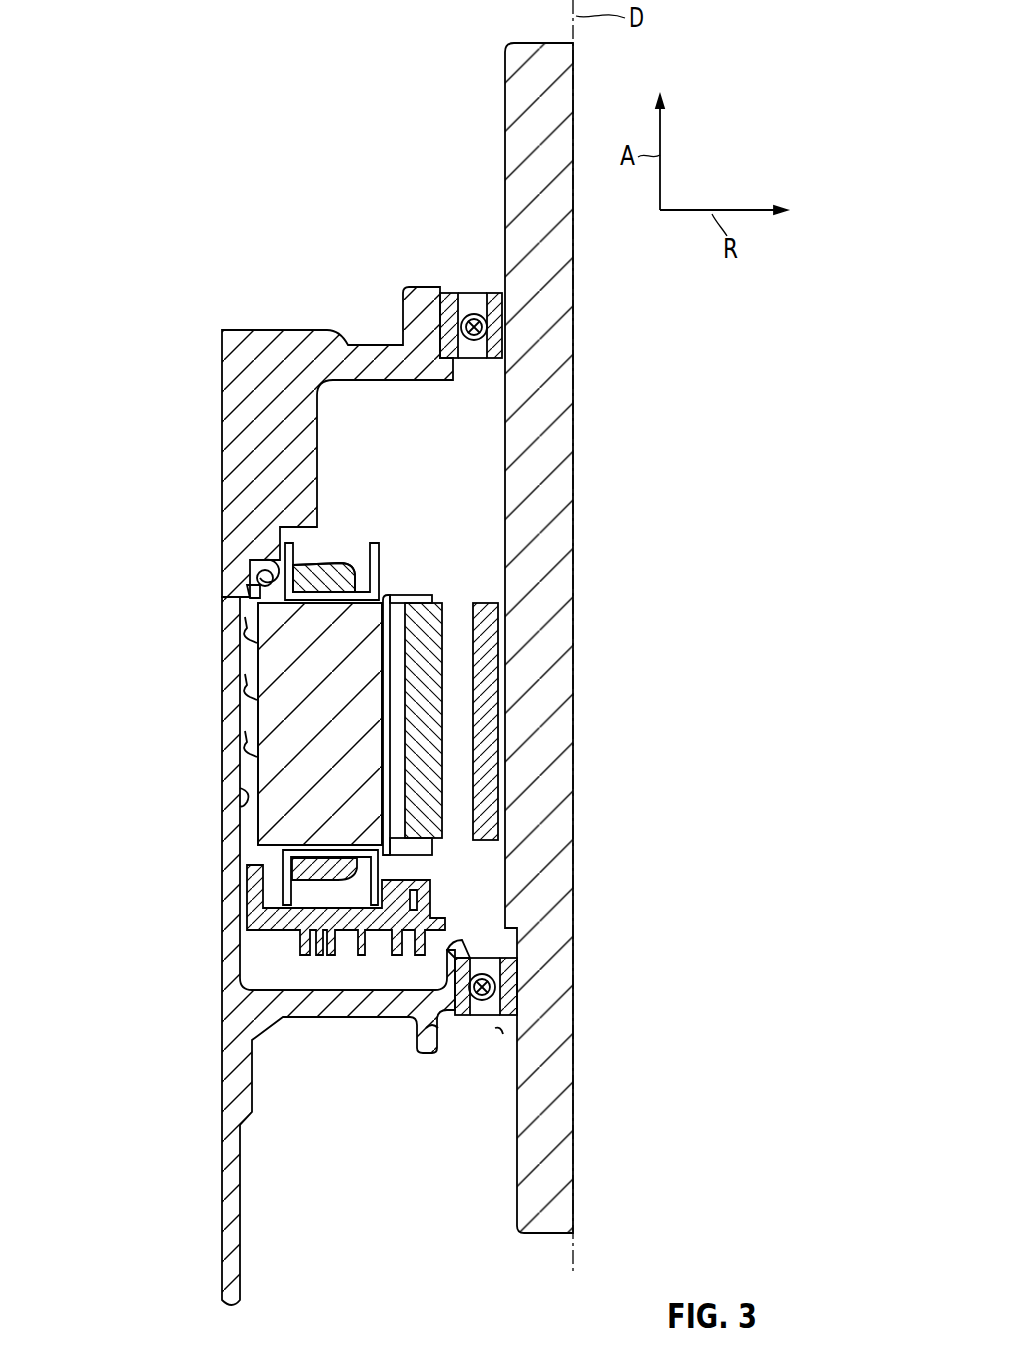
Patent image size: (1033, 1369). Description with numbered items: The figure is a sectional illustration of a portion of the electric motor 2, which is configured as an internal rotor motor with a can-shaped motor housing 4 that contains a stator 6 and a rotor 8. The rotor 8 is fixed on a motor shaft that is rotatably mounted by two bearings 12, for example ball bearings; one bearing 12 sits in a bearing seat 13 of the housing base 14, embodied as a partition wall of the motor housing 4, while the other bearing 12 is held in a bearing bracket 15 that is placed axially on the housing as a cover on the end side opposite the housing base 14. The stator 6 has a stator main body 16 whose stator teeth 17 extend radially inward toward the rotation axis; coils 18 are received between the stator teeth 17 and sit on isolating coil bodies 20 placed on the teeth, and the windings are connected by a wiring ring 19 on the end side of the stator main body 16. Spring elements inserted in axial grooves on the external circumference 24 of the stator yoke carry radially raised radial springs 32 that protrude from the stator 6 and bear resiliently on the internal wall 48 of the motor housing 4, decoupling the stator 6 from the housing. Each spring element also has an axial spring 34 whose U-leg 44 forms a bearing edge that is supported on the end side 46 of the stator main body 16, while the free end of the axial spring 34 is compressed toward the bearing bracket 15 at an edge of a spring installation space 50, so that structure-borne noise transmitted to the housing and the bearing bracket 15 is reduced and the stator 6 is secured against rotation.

The electric motor 2 is at (162, 183).
The motor housing 4 is at (228, 892).
The stator 6 is at (329, 553).
The rotor 8 is at (430, 712).
The bearings 12 is at (497, 338).
The bearing seat 13 is at (455, 955).
The housing base 14 is at (318, 1010).
The bearing bracket 15 is at (238, 368).
The stator main body 16 is at (347, 777).
The stator teeth 17 is at (320, 724).
The coils 18 is at (333, 575).
The wiring ring 19 is at (270, 927).
The coil bodies 20 is at (390, 600).
The external circumference 24 is at (257, 830).
The radial springs 32 is at (245, 642).
The axial spring 34 is at (252, 568).
The U-leg 44 is at (262, 616).
The end side 46 is at (324, 577).
The internal wall 48 is at (247, 805).
The spring installation space 50 is at (273, 563).